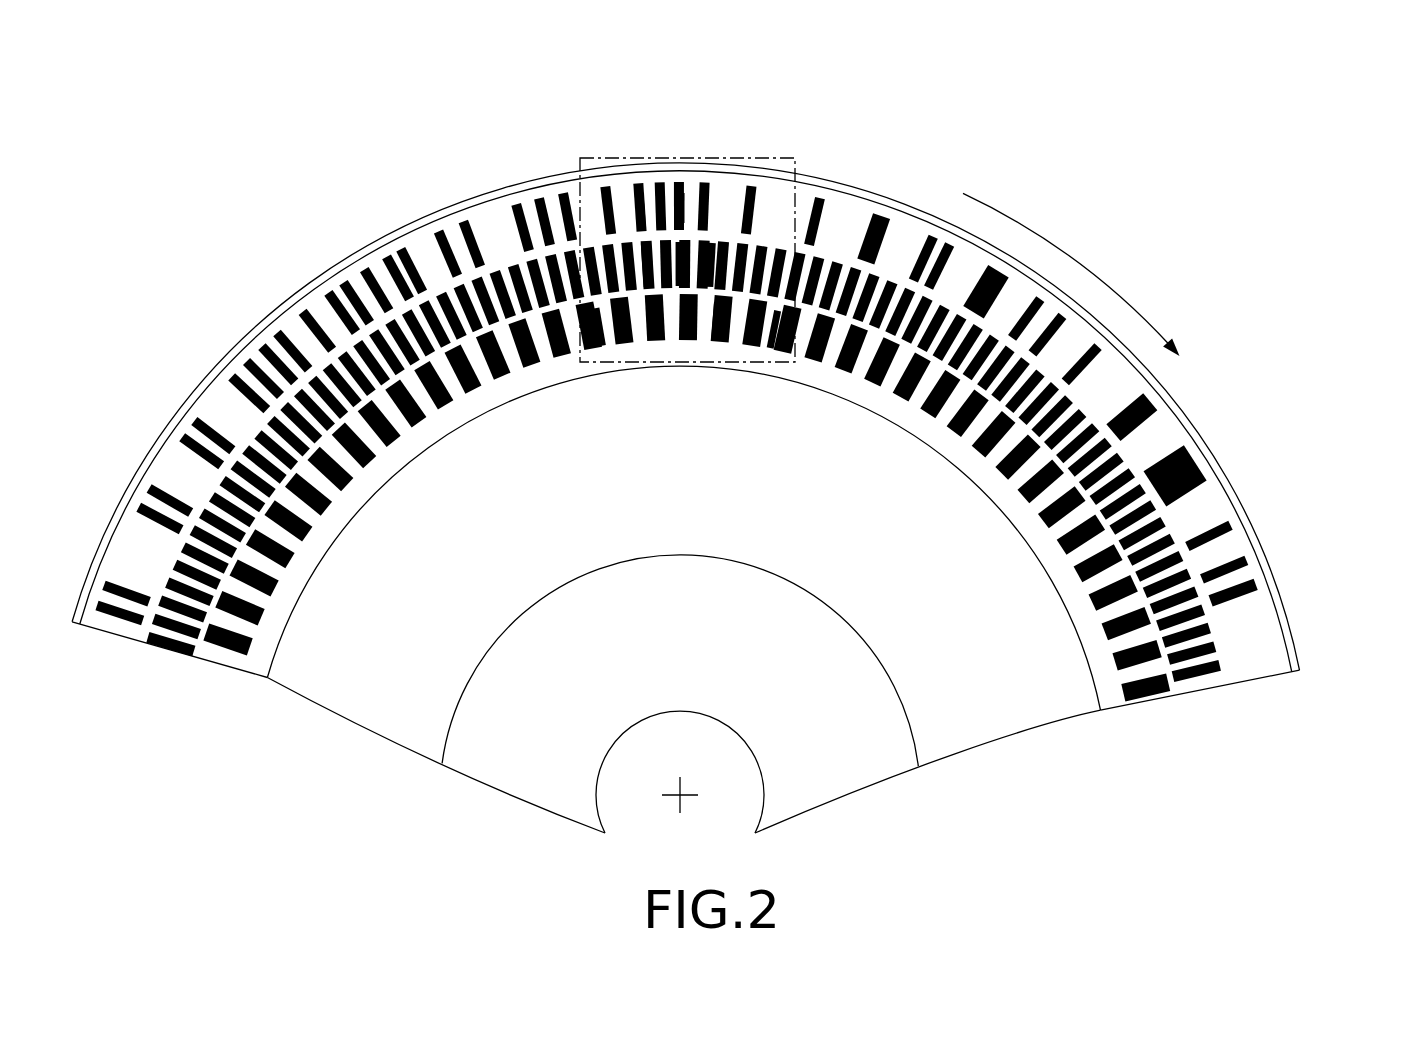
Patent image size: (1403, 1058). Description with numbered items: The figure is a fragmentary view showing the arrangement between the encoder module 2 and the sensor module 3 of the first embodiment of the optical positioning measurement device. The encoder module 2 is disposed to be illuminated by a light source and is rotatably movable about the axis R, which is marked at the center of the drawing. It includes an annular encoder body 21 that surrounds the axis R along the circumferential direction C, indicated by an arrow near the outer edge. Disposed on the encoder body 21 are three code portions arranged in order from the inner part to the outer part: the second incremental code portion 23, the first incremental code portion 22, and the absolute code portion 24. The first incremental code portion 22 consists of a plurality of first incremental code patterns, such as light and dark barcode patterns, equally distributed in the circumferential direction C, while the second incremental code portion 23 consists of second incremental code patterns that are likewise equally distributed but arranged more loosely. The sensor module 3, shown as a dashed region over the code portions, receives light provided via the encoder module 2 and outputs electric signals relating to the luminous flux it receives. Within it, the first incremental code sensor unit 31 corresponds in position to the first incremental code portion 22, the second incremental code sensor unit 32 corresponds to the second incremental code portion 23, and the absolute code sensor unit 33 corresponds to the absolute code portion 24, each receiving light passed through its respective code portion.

The encoder module 2 is at (727, 450).
The annular encoder body 21 is at (355, 680).
The first incremental code portion 22 is at (1202, 672).
The second incremental code portion 23 is at (1147, 687).
The absolute code portion 24 is at (1233, 592).
The sensor module 3 is at (687, 235).
The first incremental code sensor unit 31 is at (645, 250).
The second incremental code sensor unit 32 is at (775, 345).
The absolute code sensor unit 33 is at (705, 205).
The circumferential direction C is at (1089, 293).
The axis R is at (678, 797).